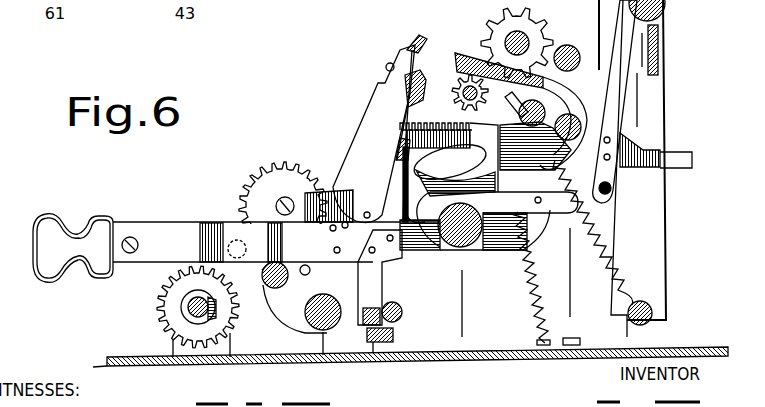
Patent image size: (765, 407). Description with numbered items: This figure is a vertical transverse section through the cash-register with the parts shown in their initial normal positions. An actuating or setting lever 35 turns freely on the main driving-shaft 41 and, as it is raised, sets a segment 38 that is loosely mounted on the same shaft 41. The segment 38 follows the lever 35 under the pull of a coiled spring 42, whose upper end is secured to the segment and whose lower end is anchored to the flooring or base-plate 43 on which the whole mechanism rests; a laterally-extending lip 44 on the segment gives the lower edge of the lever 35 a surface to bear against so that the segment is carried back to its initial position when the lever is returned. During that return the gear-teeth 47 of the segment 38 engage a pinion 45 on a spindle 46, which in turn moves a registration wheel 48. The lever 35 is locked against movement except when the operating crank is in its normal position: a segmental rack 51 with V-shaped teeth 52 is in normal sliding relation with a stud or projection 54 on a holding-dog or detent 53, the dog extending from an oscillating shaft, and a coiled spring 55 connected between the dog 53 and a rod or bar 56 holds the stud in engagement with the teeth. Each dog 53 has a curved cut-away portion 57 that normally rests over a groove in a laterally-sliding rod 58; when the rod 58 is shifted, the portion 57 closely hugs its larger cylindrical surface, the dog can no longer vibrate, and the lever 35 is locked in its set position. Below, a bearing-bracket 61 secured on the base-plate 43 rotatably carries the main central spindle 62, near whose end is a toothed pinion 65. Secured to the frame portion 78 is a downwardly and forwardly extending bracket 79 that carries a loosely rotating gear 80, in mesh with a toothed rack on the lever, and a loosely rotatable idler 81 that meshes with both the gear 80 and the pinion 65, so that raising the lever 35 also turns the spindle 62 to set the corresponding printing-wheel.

The actuating or setting lever 35 is at (143, 233).
The segment 38 is at (403, 155).
The main driving-shaft 41 is at (486, 258).
The coiled spring 42 is at (526, 276).
The base-plate 43 is at (447, 357).
The laterally-extending lip 44 is at (408, 266).
The pinion 45 is at (430, 60).
The spindle or shaft 46 is at (462, 80).
The gear-teeth 47 is at (475, 186).
The registration wheel or disk 48 is at (440, 68).
The segmental rack 51 is at (396, 335).
The V-shaped teeth 52 is at (373, 342).
The holding-dog or detent 53 is at (288, 325).
The stud or projection 54 is at (327, 203).
The coiled spring 55 is at (382, 302).
The rod or bar 56 is at (404, 313).
The curved cut-away portion 57 is at (312, 297).
The rod 58 is at (259, 302).
The bearing-bracket 61 is at (173, 348).
The main central spindle 62 is at (190, 313).
The toothed pinion 65 is at (177, 285).
The frame portion 78 is at (415, 45).
The bracket or frame-piece 79 is at (360, 150).
The gear 80 is at (332, 163).
The idler 81 is at (263, 283).